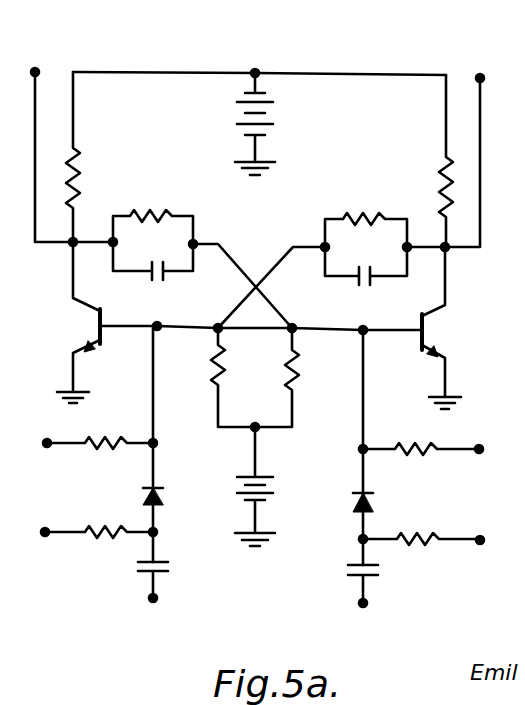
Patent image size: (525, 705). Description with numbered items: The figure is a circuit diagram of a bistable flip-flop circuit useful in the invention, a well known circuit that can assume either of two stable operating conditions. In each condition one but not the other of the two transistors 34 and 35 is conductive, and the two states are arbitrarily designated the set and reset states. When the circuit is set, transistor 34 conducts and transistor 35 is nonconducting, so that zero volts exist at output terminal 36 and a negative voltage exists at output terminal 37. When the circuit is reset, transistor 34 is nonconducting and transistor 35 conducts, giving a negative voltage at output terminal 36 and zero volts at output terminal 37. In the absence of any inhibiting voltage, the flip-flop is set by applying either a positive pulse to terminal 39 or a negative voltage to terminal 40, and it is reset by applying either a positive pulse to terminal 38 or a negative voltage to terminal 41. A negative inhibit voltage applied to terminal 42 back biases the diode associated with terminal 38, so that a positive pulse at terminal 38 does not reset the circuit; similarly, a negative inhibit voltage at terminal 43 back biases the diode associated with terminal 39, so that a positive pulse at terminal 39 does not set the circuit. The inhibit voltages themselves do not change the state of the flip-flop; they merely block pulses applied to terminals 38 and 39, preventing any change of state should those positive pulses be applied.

The transistor 34 is at (97, 323).
The transistor 35 is at (424, 330).
The output terminal 36 is at (37, 70).
The output terminal 37 is at (484, 66).
The terminal 38 is at (157, 598).
The terminal 39 is at (359, 603).
The terminal 40 is at (52, 432).
The terminal 41 is at (482, 448).
The terminal 42 is at (50, 521).
The terminal 43 is at (483, 539).